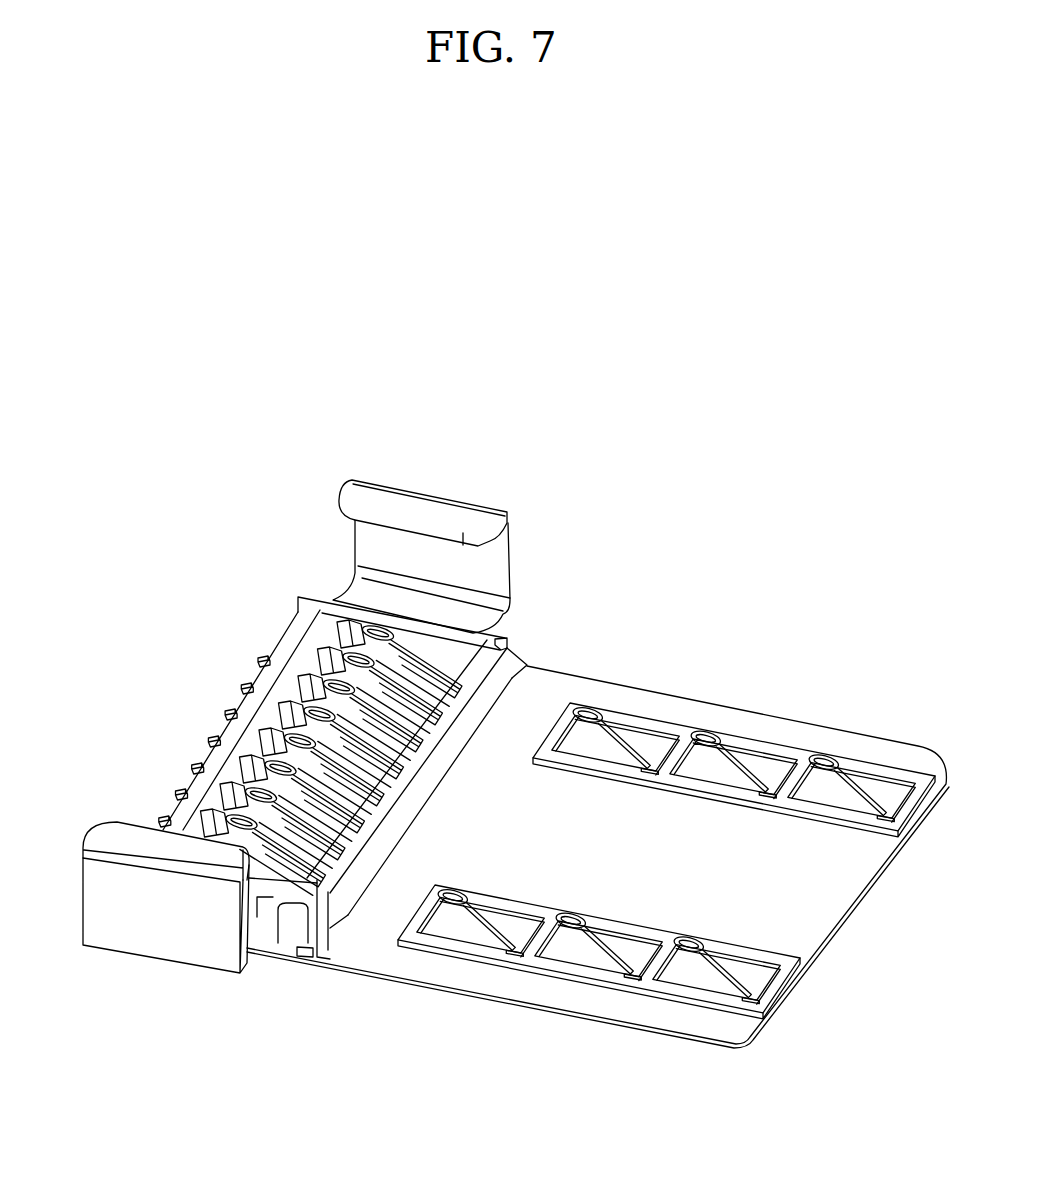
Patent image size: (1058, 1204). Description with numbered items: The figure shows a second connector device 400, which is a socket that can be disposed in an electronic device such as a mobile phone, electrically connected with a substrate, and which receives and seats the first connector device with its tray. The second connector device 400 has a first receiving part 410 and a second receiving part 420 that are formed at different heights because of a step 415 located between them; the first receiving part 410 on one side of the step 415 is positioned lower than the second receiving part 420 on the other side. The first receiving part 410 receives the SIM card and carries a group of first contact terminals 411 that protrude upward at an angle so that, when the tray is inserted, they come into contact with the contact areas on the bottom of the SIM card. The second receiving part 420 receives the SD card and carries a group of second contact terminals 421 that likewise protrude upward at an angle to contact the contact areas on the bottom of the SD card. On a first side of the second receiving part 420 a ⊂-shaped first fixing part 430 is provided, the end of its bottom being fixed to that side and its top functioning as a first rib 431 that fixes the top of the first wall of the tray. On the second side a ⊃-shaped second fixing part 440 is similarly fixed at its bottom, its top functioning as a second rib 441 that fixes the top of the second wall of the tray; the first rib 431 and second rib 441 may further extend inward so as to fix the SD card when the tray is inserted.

The second connector device 400 is at (690, 500).
The first receiving part 410 is at (807, 883).
The first contact terminals 411 is at (583, 712).
The step 415 is at (343, 893).
The second receiving part 420 is at (472, 637).
The second contact terminals 421 is at (367, 627).
The first fixing part 430 is at (137, 913).
The first rib 431 is at (117, 835).
The second fixing part 440 is at (370, 540).
The second rib 441 is at (358, 500).